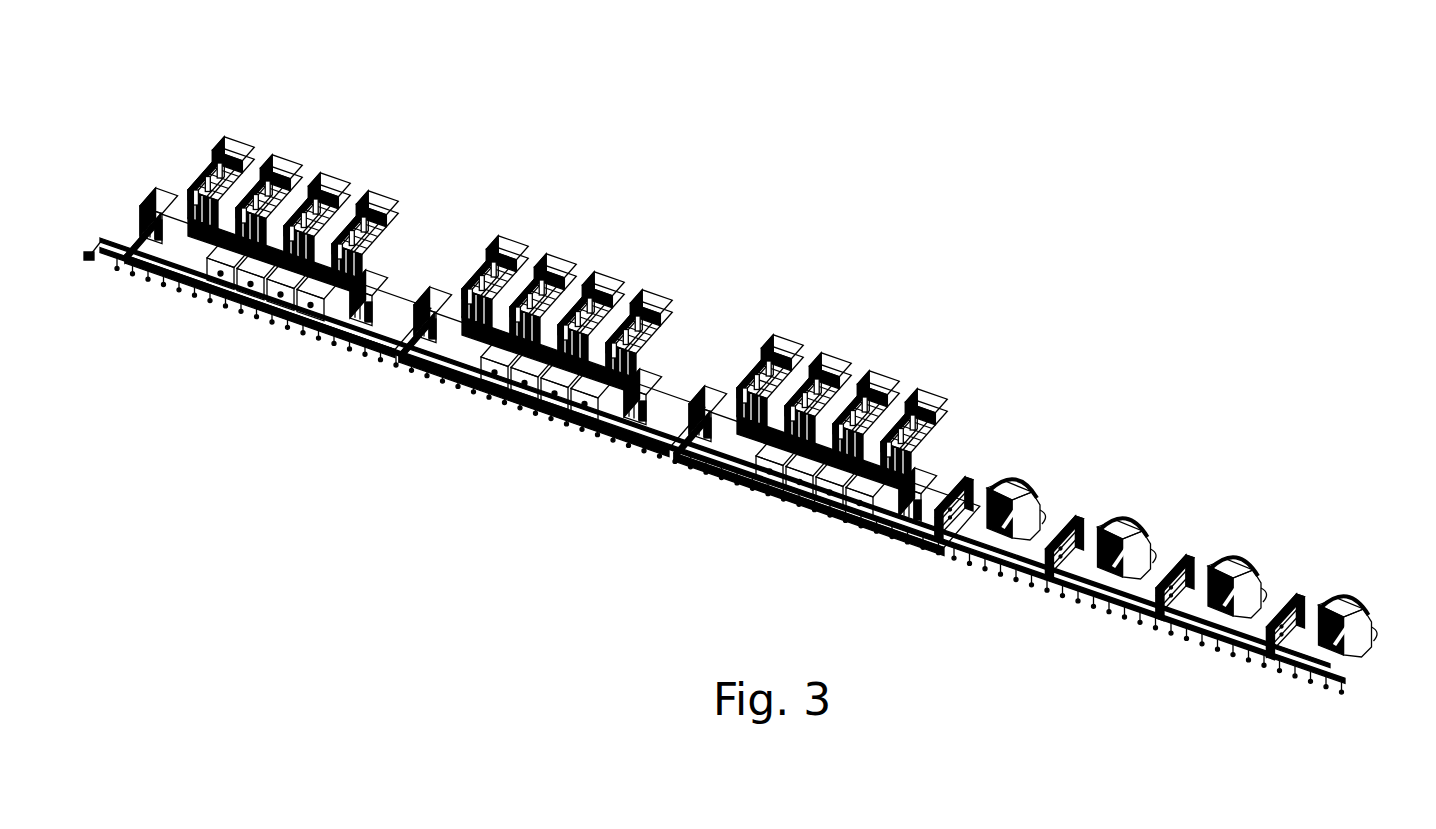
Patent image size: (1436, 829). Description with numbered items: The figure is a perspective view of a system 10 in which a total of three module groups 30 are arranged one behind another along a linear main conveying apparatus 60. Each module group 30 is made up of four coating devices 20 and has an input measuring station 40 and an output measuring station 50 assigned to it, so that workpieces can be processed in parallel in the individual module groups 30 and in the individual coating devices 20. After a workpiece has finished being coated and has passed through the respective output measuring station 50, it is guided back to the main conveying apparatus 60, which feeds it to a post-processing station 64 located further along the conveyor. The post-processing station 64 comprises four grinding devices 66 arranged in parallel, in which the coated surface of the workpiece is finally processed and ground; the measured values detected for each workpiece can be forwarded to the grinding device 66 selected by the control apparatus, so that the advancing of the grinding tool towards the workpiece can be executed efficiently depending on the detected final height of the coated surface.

The system 10 is at (818, 153).
The coating device 20 is at (250, 140).
The module group 30 is at (360, 100).
The input measuring station 40 is at (150, 200).
The output measuring station 50 is at (355, 345).
The main conveying apparatus 60 is at (235, 312).
The post-processing station 64 is at (1192, 520).
The grinding device 66 is at (1012, 485).